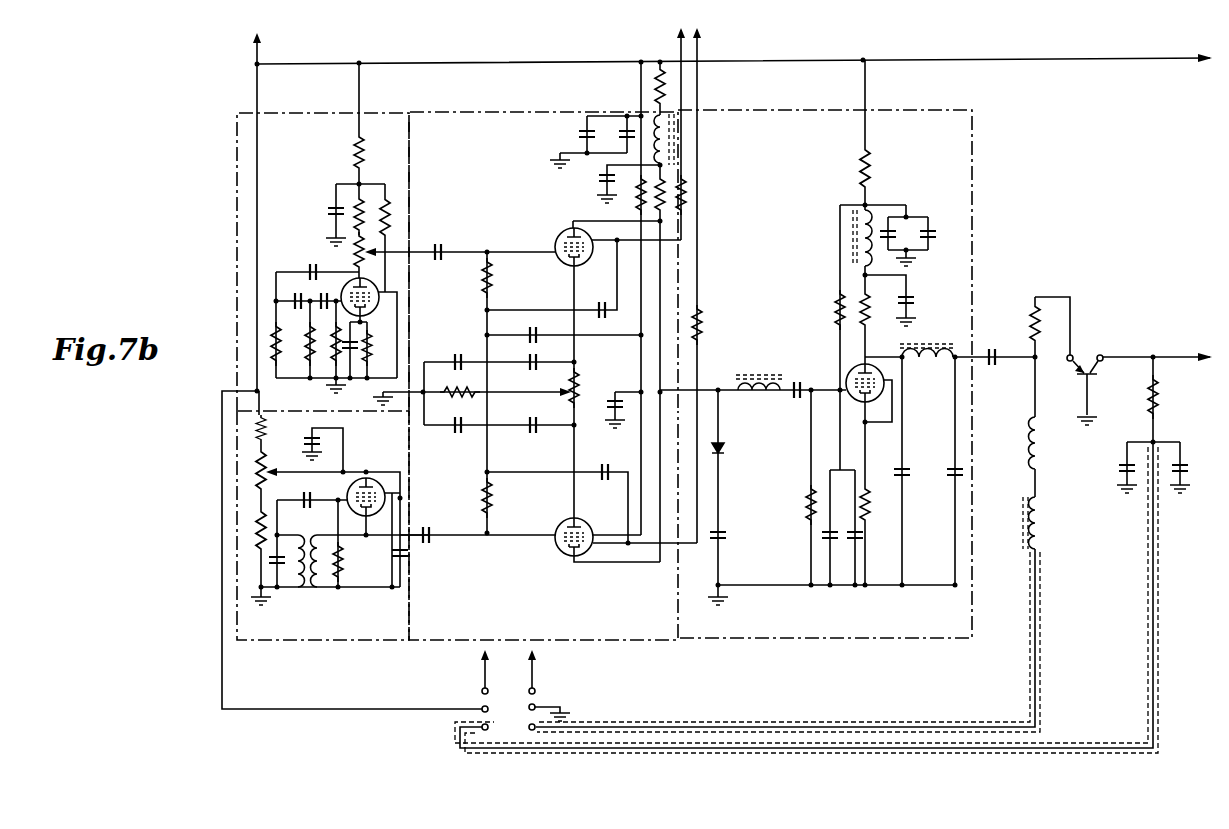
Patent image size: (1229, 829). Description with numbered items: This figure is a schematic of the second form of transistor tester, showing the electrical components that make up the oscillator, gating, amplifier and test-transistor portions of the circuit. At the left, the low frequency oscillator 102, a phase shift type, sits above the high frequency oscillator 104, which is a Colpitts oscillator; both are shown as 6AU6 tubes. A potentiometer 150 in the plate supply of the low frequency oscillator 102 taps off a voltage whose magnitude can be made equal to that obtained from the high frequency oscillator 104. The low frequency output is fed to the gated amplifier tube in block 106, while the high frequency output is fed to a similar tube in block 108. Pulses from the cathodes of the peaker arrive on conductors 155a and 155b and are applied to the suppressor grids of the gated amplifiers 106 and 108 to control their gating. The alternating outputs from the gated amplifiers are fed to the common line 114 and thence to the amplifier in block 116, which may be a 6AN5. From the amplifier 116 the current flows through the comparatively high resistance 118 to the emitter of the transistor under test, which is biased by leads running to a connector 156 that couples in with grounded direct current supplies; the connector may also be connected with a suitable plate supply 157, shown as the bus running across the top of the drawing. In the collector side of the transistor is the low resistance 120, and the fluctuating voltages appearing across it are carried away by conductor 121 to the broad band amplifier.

The plate supply 157 is at (255, 62).
The low frequency oscillator 102 is at (323, 237).
The high frequency oscillator 104 is at (350, 650).
The gated amplifier 106 is at (565, 103).
The gated amplifier 108 is at (610, 650).
The amplifier 116 is at (847, 349).
The conductor 155a is at (677, 52).
The conductor 155b is at (699, 54).
The potentiometer 150 is at (358, 258).
The common line 114 is at (720, 382).
The high resistance 118 is at (1028, 326).
The low resistance 120 is at (1160, 395).
The conductor 121 is at (1178, 355).
The connector 156 is at (543, 699).